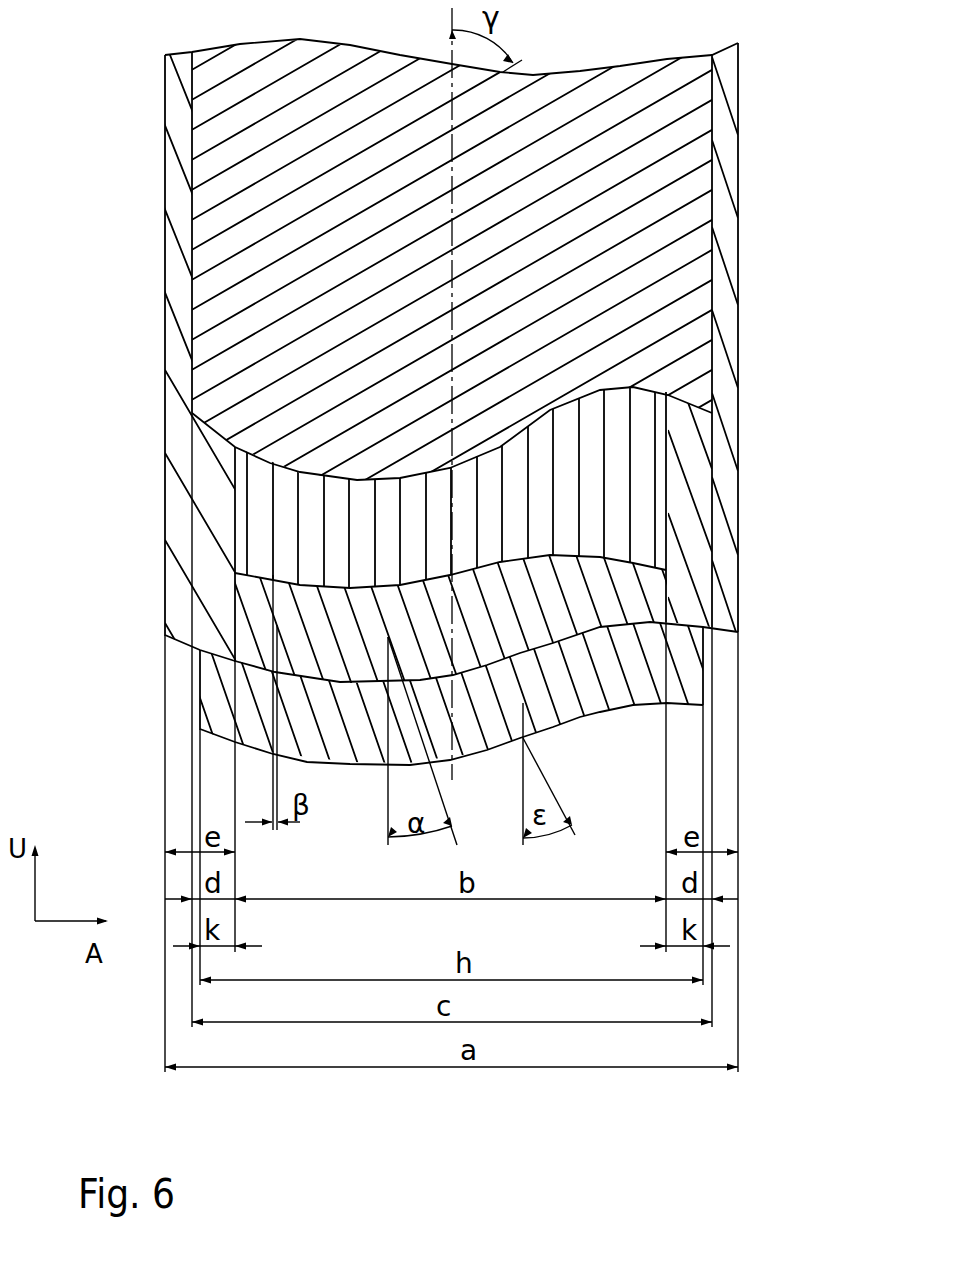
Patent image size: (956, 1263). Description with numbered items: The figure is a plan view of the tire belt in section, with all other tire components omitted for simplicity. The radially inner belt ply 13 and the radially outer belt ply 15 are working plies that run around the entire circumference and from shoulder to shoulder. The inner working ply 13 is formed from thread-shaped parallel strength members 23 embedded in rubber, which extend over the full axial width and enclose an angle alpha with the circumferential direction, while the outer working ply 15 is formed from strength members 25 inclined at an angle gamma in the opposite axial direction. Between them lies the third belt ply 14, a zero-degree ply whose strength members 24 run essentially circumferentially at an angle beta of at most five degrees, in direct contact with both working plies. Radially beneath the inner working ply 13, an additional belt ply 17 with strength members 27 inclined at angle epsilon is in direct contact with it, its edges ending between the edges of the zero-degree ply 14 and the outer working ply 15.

The radially inner belt ply 13 is at (780, 340).
The third belt ply 14 is at (744, 533).
The radially outer belt ply 15 is at (499, 362).
The belt ply 17 is at (506, 636).
The strength members 23 is at (152, 565).
The strength members 24 is at (362, 521).
The strength members 25 is at (131, 338).
The strength members 27 is at (397, 695).